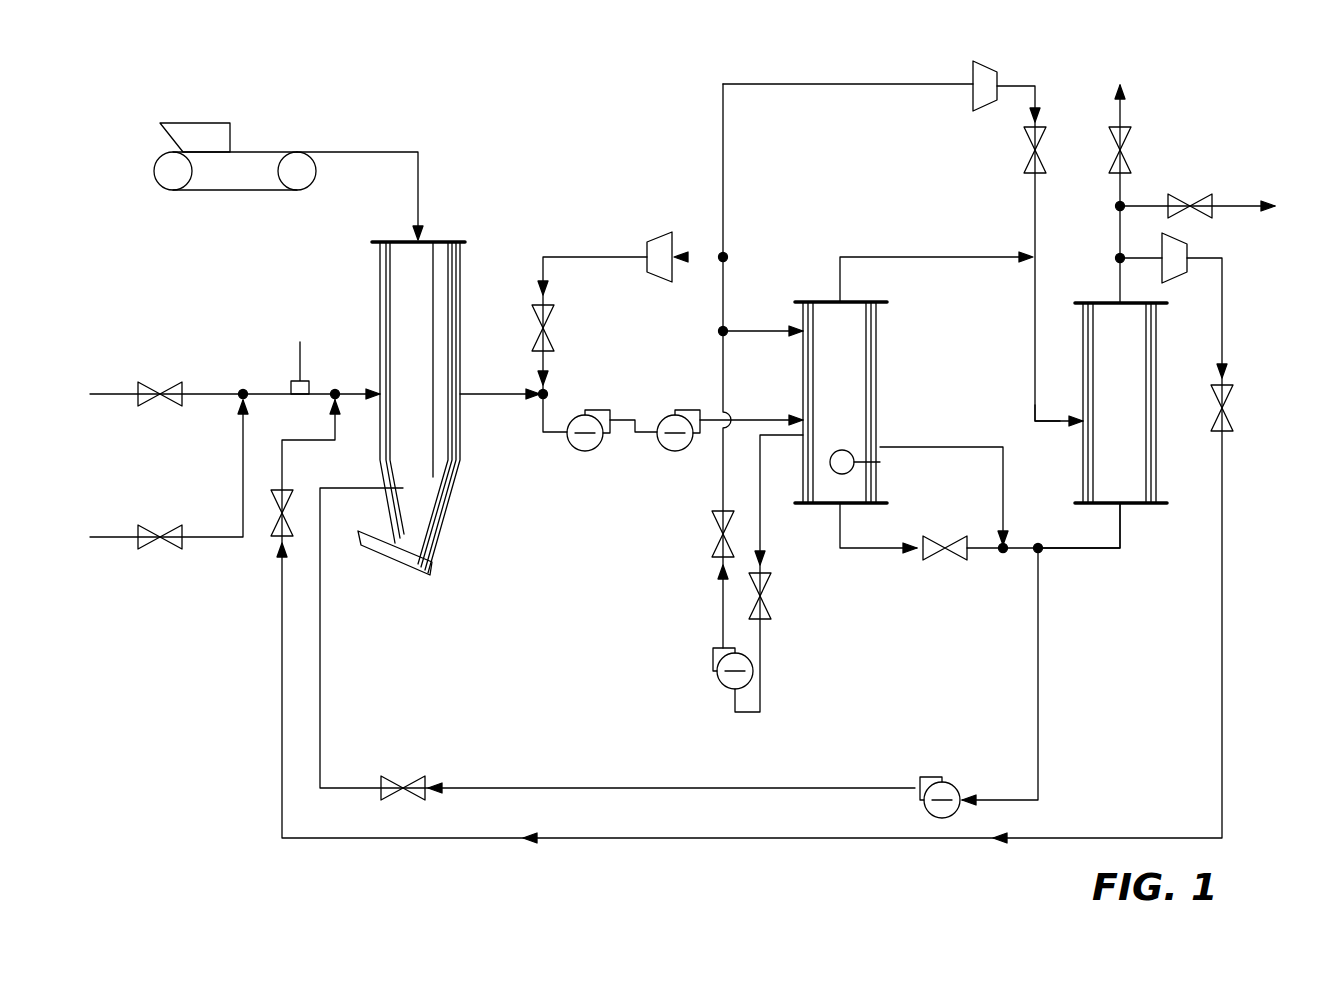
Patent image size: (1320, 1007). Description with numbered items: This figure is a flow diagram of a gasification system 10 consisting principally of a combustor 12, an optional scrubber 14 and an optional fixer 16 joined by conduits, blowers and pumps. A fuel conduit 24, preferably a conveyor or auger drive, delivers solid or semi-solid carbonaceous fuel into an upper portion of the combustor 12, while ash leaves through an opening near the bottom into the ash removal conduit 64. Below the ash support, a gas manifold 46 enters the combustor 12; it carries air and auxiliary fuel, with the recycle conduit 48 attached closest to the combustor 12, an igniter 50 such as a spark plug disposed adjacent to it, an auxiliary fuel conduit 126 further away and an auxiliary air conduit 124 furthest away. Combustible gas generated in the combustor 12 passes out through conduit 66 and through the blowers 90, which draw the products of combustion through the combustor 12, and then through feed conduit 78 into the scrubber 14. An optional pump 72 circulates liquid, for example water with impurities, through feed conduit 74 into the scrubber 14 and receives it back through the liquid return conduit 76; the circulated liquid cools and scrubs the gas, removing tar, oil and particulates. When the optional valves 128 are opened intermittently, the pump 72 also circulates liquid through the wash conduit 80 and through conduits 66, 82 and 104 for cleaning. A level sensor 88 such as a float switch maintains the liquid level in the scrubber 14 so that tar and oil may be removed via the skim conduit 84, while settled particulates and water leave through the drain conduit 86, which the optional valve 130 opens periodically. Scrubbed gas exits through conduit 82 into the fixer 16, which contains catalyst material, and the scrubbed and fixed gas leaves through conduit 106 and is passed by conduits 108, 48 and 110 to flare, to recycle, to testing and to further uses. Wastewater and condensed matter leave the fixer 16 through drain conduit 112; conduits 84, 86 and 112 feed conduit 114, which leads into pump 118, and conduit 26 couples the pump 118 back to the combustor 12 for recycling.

The gasification system 10 is at (474, 84).
The fuel conduit 24 is at (365, 152).
The combustor 12 is at (380, 270).
The ash removal conduit 64 is at (413, 565).
The gas manifold 46 is at (345, 388).
The auxiliary air conduit 124 is at (203, 393).
The igniter 50 is at (298, 376).
The auxiliary fuel conduit 126 is at (228, 537).
The recycle conduit 48 is at (283, 613).
The conduit 26 is at (320, 612).
The conduit 66 is at (490, 396).
The valves 128 is at (540, 305).
The blowers 90 is at (665, 452).
The feed conduit 78 is at (750, 421).
The feed conduit 74 is at (723, 597).
The pump 72 is at (718, 650).
The liquid return conduit 76 is at (760, 520).
The wash conduit 80 is at (723, 182).
The conduit 104 is at (1037, 405).
The conduit 82 is at (918, 257).
The scrubber 14 is at (880, 330).
The level sensor 88 is at (851, 452).
The skim conduit 84 is at (940, 447).
The drain conduit 86 is at (868, 548).
The valve 130 is at (923, 560).
The drain conduit 112 is at (1085, 548).
The conduit 114 is at (1046, 622).
The pump 118 is at (935, 792).
The fixer 16 is at (1130, 345).
The conduit 108 is at (1122, 115).
The conduit 110 is at (1225, 206).
The conduit 106 is at (1118, 287).